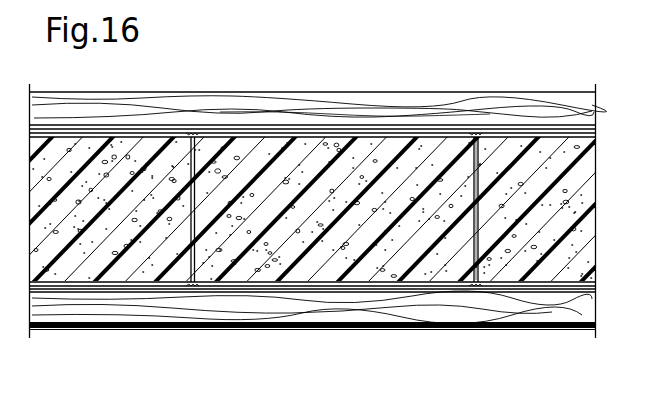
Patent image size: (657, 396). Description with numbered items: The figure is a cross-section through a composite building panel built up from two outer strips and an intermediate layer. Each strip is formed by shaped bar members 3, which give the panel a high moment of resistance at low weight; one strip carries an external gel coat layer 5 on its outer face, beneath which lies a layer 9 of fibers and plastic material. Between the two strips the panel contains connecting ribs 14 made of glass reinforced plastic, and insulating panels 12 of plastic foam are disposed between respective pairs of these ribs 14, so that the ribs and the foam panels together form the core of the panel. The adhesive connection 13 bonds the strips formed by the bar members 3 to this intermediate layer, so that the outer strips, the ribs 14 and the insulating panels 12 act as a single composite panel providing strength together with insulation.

The shaped bar members 3 is at (183, 91).
The external gel coat layer 5 is at (135, 325).
The layer of fibers and plastic material 9 is at (263, 137).
The insulating panels 12 is at (332, 195).
The adhesive connection 13 is at (427, 137).
The connecting ribs 14 is at (490, 193).